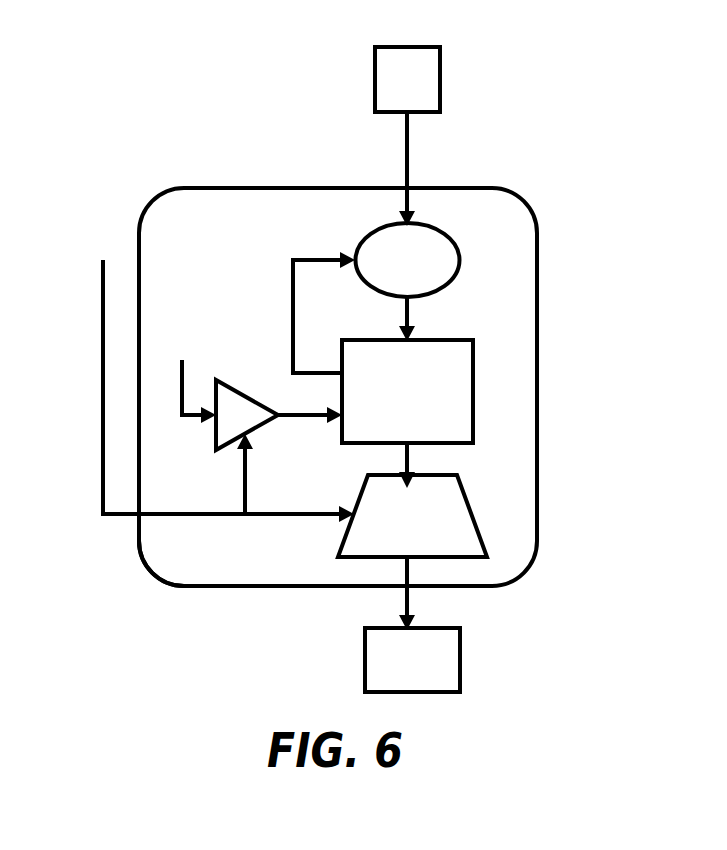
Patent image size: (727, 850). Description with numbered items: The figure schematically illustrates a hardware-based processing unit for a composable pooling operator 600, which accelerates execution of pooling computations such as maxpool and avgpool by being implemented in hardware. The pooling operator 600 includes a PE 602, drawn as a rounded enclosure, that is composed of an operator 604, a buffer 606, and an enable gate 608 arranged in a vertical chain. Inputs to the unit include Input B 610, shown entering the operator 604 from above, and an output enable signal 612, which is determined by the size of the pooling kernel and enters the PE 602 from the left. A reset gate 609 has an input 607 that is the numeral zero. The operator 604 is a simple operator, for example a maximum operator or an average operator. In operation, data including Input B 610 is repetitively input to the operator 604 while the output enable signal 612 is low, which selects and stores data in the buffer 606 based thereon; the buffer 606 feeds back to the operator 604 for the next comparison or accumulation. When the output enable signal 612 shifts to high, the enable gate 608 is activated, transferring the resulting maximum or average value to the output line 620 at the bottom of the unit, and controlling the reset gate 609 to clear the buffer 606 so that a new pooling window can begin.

The pooling operator 600 is at (143, 177).
The PE 602 is at (152, 572).
The operator 604 is at (460, 260).
The buffer 606 is at (473, 388).
The input 607 is at (210, 356).
The enable gate 608 is at (475, 517).
The reset gate 609 is at (252, 395).
The Input B 610 is at (440, 82).
The output enable signal 612 is at (123, 256).
The output line 620 is at (460, 660).